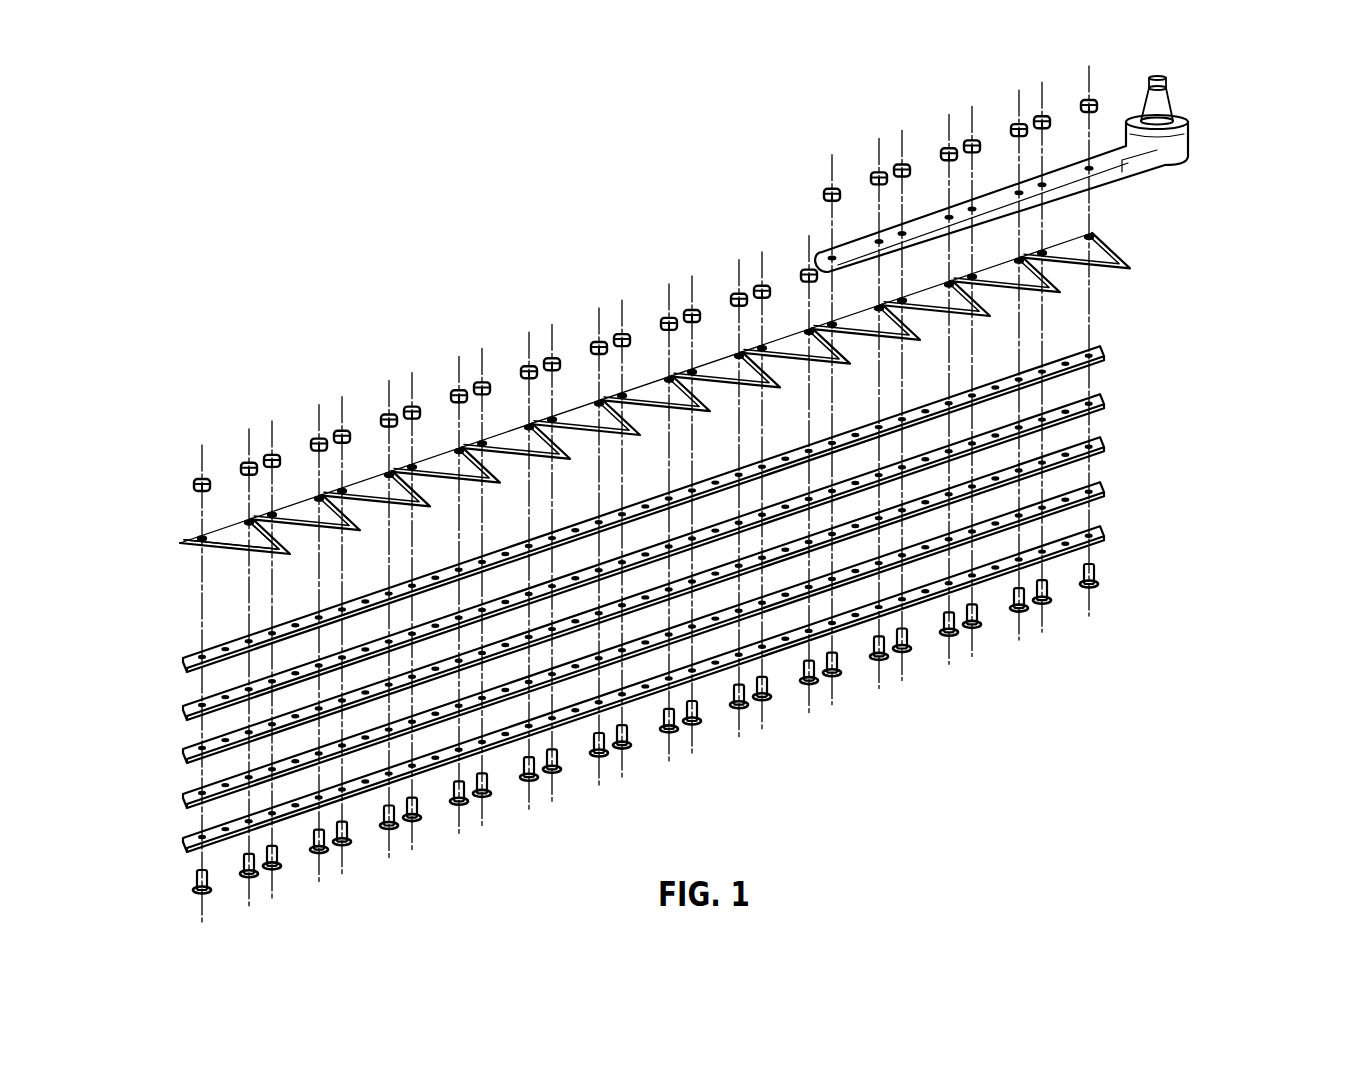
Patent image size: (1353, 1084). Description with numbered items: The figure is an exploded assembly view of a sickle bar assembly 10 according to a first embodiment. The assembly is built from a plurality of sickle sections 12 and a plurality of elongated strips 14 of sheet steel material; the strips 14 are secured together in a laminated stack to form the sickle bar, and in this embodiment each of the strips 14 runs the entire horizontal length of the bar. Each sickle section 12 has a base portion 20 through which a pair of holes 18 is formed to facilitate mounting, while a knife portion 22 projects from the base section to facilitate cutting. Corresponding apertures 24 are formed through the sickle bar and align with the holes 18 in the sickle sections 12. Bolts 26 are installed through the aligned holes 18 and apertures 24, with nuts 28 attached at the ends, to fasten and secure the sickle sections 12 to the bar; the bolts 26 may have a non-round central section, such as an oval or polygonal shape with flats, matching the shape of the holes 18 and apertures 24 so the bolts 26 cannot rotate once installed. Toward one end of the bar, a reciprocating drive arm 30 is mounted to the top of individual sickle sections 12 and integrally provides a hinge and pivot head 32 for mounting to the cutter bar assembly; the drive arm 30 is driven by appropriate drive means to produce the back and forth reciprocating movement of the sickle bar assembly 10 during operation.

The sickle bar assembly 10 is at (718, 494).
The sickle section 12 is at (623, 410).
The elongated strip 14 is at (651, 592).
The hole 18 is at (483, 438).
The base portion 20 is at (240, 533).
The knife portion 22 is at (245, 545).
The aperture 24 is at (247, 638).
The bolt 26 is at (628, 748).
The nut 28 is at (622, 330).
The reciprocating drive arm 30 is at (1044, 174).
The hinge and pivot head 32 is at (1163, 101).